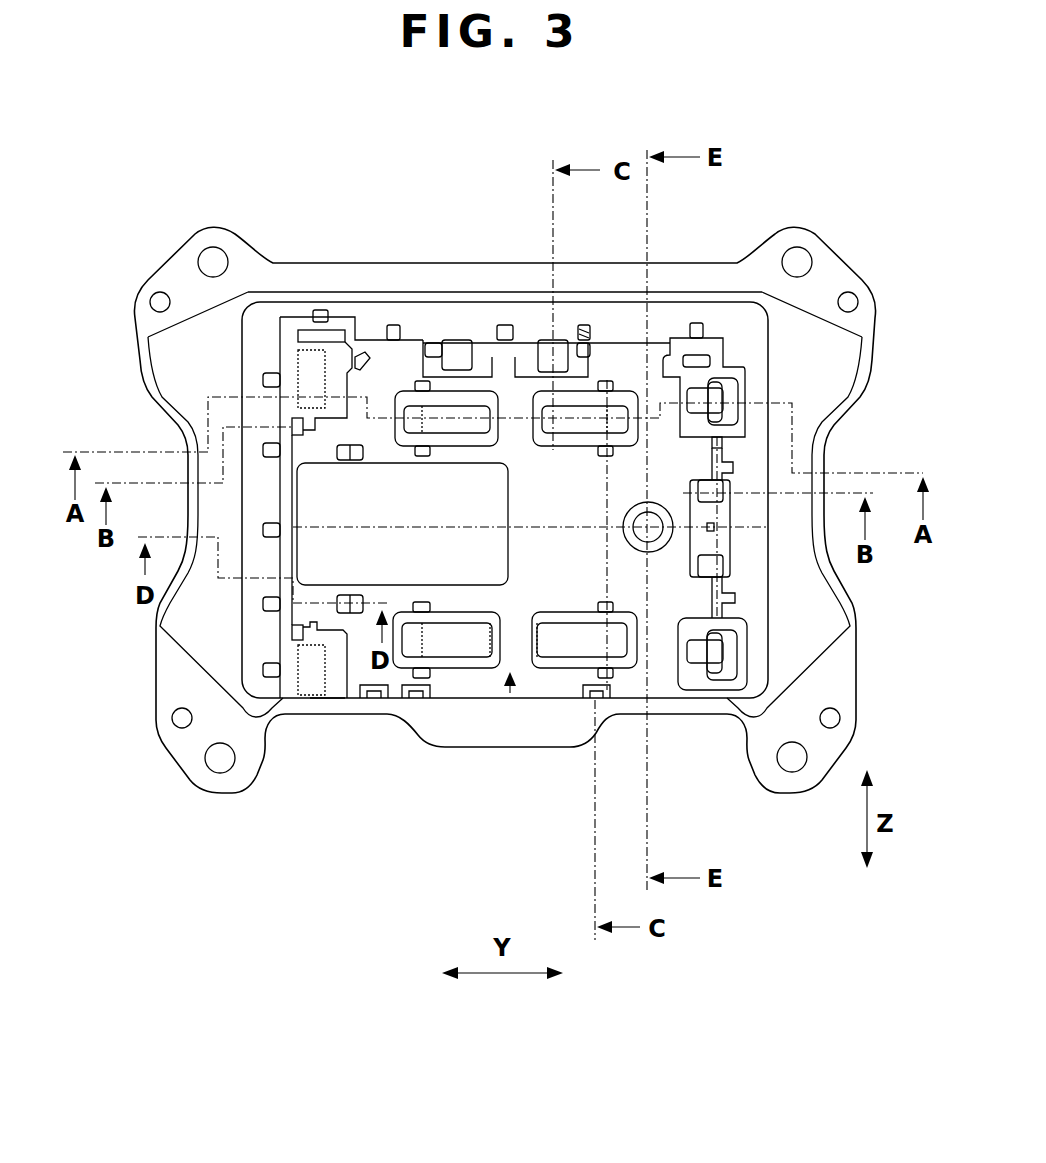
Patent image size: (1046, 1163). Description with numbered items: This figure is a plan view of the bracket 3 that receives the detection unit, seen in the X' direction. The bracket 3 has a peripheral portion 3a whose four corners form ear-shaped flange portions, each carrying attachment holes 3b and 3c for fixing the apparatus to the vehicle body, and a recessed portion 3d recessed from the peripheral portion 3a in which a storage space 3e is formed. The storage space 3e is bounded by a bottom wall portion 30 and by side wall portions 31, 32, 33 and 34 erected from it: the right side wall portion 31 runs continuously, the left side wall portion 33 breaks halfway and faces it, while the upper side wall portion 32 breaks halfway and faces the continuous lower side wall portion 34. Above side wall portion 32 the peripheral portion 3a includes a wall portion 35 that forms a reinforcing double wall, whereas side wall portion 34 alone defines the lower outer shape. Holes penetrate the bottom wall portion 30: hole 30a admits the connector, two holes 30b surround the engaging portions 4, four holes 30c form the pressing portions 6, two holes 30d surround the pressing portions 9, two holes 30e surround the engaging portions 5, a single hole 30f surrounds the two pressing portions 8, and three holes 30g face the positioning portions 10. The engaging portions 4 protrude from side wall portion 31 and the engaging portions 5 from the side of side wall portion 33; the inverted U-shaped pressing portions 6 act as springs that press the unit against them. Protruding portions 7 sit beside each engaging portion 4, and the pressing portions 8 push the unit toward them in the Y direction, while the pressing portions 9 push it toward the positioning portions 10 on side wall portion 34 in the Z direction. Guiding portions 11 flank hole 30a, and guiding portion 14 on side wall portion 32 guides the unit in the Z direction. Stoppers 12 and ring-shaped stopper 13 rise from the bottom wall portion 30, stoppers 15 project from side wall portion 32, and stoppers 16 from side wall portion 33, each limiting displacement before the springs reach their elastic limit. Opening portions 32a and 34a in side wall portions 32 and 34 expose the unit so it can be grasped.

The bracket 3 is at (160, 228).
The peripheral portion 3a is at (175, 768).
The attachment hole 3b is at (213, 247).
The attachment hole 3c is at (150, 302).
The recessed portion 3d is at (773, 378).
The storage space 3e is at (485, 742).
The engaging portion 4 is at (322, 345).
The engaging portion 5 is at (720, 390).
The pressing portion 6 is at (420, 412).
The protruding portion 7 is at (292, 425).
The pressing portion 8 is at (722, 488).
The pressing portion 9 is at (448, 340).
The positioning portion 10 is at (372, 700).
The guiding portion 11 is at (352, 462).
The stopper 12 is at (423, 456).
The stopper 13 is at (650, 503).
The guiding portion 14 is at (360, 372).
The stopper 15 is at (432, 343).
The stopper 16 is at (714, 527).
The bottom wall portion 30 is at (505, 500).
The hole 30a is at (402, 524).
The hole 30b is at (300, 330).
The hole 30c is at (508, 444).
The hole 30d is at (475, 343).
The hole 30e is at (705, 372).
The hole 30f is at (692, 560).
The hole 30g is at (590, 700).
The side wall portion 31 is at (278, 503).
The side wall portion 32 is at (393, 325).
The opening portion 32a is at (625, 352).
The side wall portion 33 is at (733, 468).
The side wall portion 34 is at (365, 700).
The opening portion 34a is at (667, 715).
The wall portion 35 is at (372, 262).